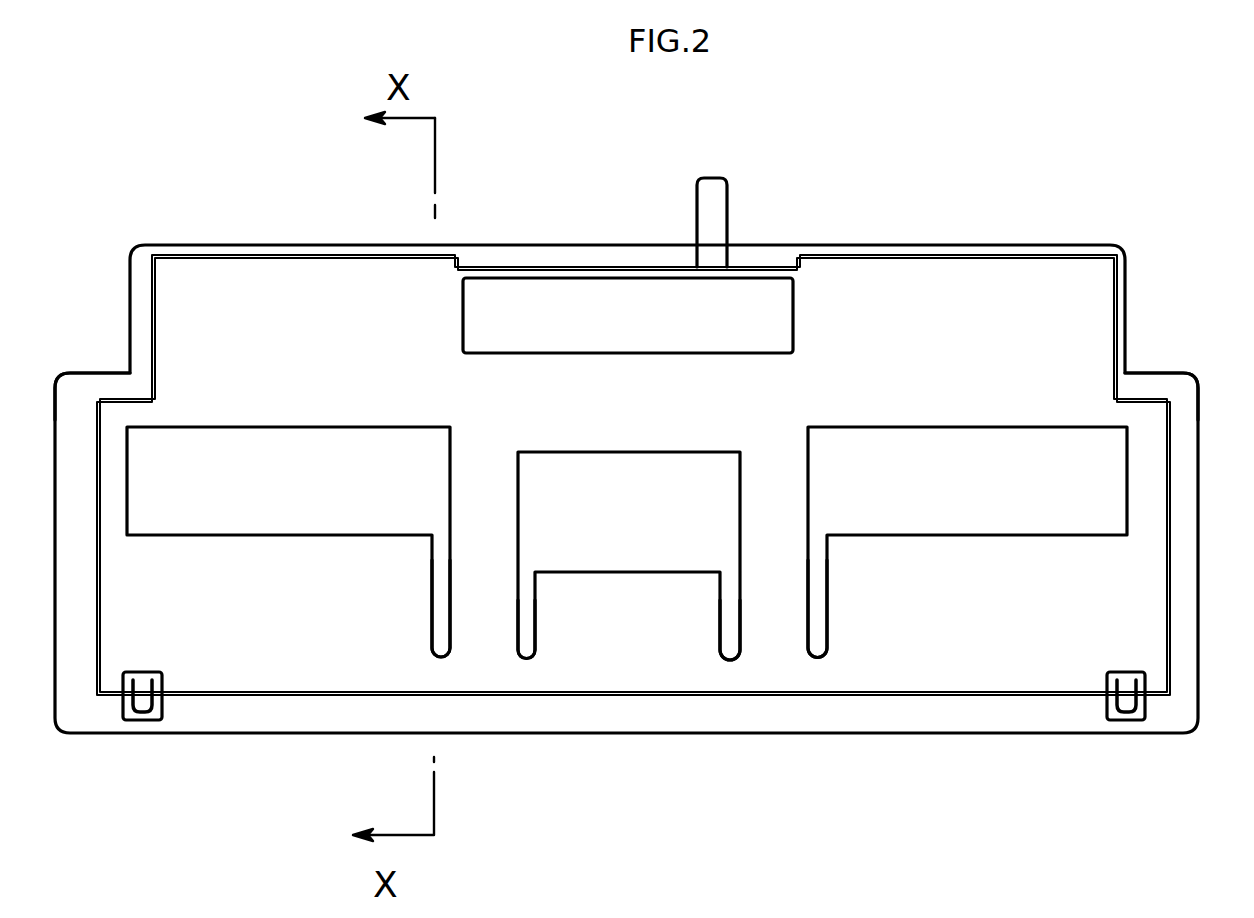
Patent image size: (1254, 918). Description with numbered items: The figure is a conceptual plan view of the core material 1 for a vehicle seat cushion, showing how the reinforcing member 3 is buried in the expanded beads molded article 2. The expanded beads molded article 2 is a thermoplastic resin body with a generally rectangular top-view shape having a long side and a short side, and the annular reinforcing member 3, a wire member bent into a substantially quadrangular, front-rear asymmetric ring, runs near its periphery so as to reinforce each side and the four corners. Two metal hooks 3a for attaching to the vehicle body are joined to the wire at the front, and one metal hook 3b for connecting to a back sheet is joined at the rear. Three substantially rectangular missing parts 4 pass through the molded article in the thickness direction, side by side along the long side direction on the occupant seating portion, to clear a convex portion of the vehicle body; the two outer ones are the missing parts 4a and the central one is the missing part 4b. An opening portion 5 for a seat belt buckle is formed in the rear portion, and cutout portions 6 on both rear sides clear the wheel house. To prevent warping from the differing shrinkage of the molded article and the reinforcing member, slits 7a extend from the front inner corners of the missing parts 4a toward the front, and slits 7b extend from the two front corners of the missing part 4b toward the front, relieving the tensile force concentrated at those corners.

The core material for a seat cushion for a vehicle 1 is at (275, 237).
The expanded beads molded article 2 is at (920, 300).
The reinforcing member 3 is at (1040, 258).
The metal hook 3a is at (143, 722).
The metal hook 3b is at (720, 220).
The missing part 4 is at (627, 513).
The missing part 4a is at (296, 468).
The missing part 4b is at (630, 515).
The opening portion for seat belt buckle 5 is at (622, 312).
The cutout portion 6 is at (113, 320).
The slit 7a is at (440, 615).
The slit 7b is at (727, 593).